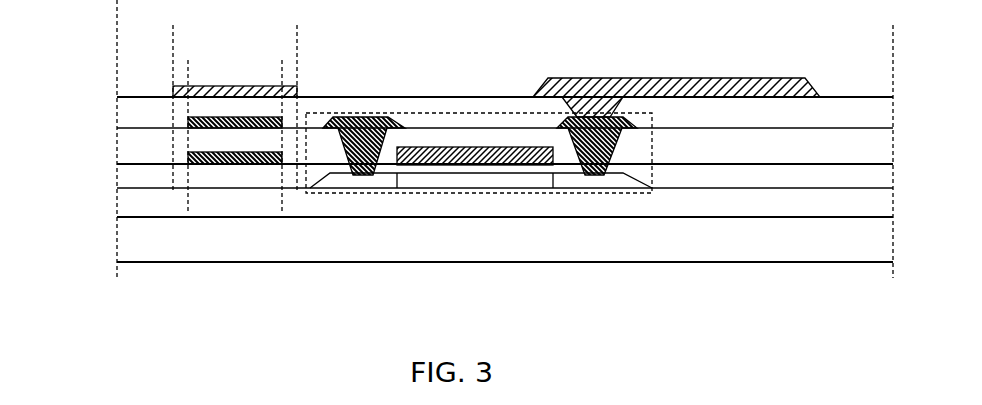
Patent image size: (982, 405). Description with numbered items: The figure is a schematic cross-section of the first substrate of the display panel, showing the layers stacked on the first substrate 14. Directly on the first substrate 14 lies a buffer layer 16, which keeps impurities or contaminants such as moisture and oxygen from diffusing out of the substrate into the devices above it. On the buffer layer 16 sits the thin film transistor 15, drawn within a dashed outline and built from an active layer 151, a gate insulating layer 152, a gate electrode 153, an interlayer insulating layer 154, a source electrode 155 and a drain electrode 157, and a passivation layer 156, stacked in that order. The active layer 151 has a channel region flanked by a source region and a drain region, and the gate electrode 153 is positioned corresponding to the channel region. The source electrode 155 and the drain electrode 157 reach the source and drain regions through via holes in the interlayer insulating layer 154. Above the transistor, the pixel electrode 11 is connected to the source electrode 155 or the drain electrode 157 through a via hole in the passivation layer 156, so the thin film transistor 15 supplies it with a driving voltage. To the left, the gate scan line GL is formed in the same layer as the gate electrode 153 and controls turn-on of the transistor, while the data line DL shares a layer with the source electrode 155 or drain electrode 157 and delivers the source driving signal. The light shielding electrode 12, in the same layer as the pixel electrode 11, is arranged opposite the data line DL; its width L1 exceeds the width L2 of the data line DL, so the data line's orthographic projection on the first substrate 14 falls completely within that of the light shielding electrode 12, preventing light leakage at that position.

The pixel electrode 11 is at (588, 95).
The light shielding electrode 12 is at (263, 90).
The first substrate 14 is at (138, 238).
The thin film transistor 15 is at (427, 112).
The buffer layer 16 is at (138, 205).
The active layer 151 is at (421, 182).
The gate insulating layer 152 is at (138, 178).
The gate electrode 153 is at (483, 165).
The interlayer insulating layer 154 is at (138, 142).
The source electrode 155 is at (363, 175).
The passivation layer 156 is at (138, 111).
The drain electrode 157 is at (593, 175).
The gate scan line GL is at (197, 164).
The data line DL is at (228, 128).
The width of the light shielding electrode L1 is at (297, 49).
The width of the data line L2 is at (282, 75).